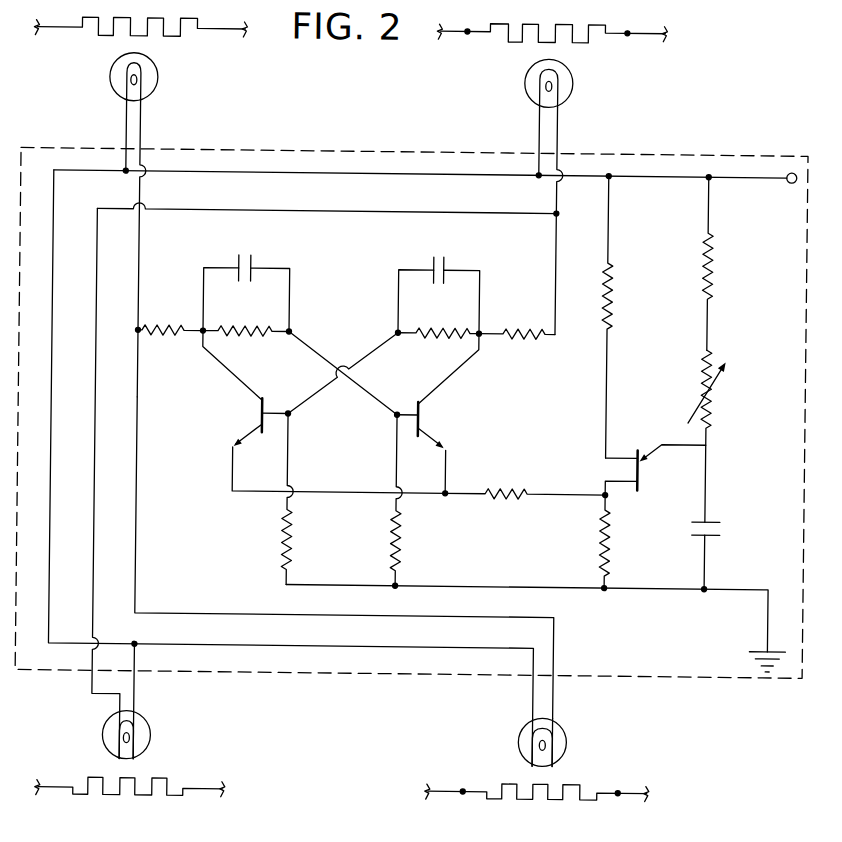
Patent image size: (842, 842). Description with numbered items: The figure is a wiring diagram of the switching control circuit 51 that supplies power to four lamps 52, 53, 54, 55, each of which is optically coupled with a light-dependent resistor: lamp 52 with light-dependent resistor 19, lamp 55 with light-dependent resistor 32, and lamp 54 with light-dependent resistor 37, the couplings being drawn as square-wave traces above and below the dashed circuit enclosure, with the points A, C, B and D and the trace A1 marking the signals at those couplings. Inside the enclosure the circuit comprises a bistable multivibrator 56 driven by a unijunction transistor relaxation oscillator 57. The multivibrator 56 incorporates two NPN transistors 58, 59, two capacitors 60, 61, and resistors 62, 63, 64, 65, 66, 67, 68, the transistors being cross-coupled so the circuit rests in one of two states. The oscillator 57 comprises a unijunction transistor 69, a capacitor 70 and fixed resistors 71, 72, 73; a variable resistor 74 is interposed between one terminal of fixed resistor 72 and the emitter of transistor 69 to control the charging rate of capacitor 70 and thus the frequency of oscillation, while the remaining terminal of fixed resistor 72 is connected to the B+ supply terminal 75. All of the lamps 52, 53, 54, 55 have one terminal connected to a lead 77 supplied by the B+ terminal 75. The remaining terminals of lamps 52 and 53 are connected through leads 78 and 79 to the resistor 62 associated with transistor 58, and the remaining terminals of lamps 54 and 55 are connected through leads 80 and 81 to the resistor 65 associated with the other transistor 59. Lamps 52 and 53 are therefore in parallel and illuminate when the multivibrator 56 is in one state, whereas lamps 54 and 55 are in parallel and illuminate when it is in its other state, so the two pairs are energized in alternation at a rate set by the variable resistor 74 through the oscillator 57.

The light-dependent resistor 19 is at (97, 38).
The lamp 52 is at (156, 80).
The lamp 55 is at (571, 84).
The light-dependent resistor 32 is at (508, 42).
The point A is at (462, 37).
The point C is at (624, 37).
The switching control circuit 51 is at (325, 149).
The lead 77 is at (358, 176).
The B+ supply terminal 75 is at (789, 181).
The lead 78 is at (140, 242).
The lead 81 is at (557, 246).
The capacitor 60 is at (252, 268).
The capacitor 61 is at (444, 268).
The resistor 62 is at (160, 330).
The resistor 63 is at (245, 330).
The resistor 64 is at (436, 333).
The resistor 65 is at (517, 333).
The fixed resistor 71 is at (612, 285).
The fixed resistor 72 is at (712, 268).
The variable resistor 74 is at (712, 395).
The bistable multivibrator 56 is at (236, 399).
The NPN transistor 59 is at (425, 414).
The unijunction transistor relaxation oscillator 57 is at (589, 397).
The NPN transistor 58 is at (257, 440).
The unijunction transistor 69 is at (619, 456).
The resistor 66 is at (294, 540).
The resistor 67 is at (403, 540).
The resistor 68 is at (506, 504).
The fixed resistor 73 is at (612, 532).
The capacitor 70 is at (722, 526).
The lead 80 is at (97, 538).
The lead 79 is at (139, 580).
The lamp 54 is at (155, 737).
The lamp 53 is at (571, 742).
The light-dependent resistor 37 is at (146, 797).
The point B is at (466, 797).
The square wave signal A1 is at (558, 800).
The point D is at (621, 797).